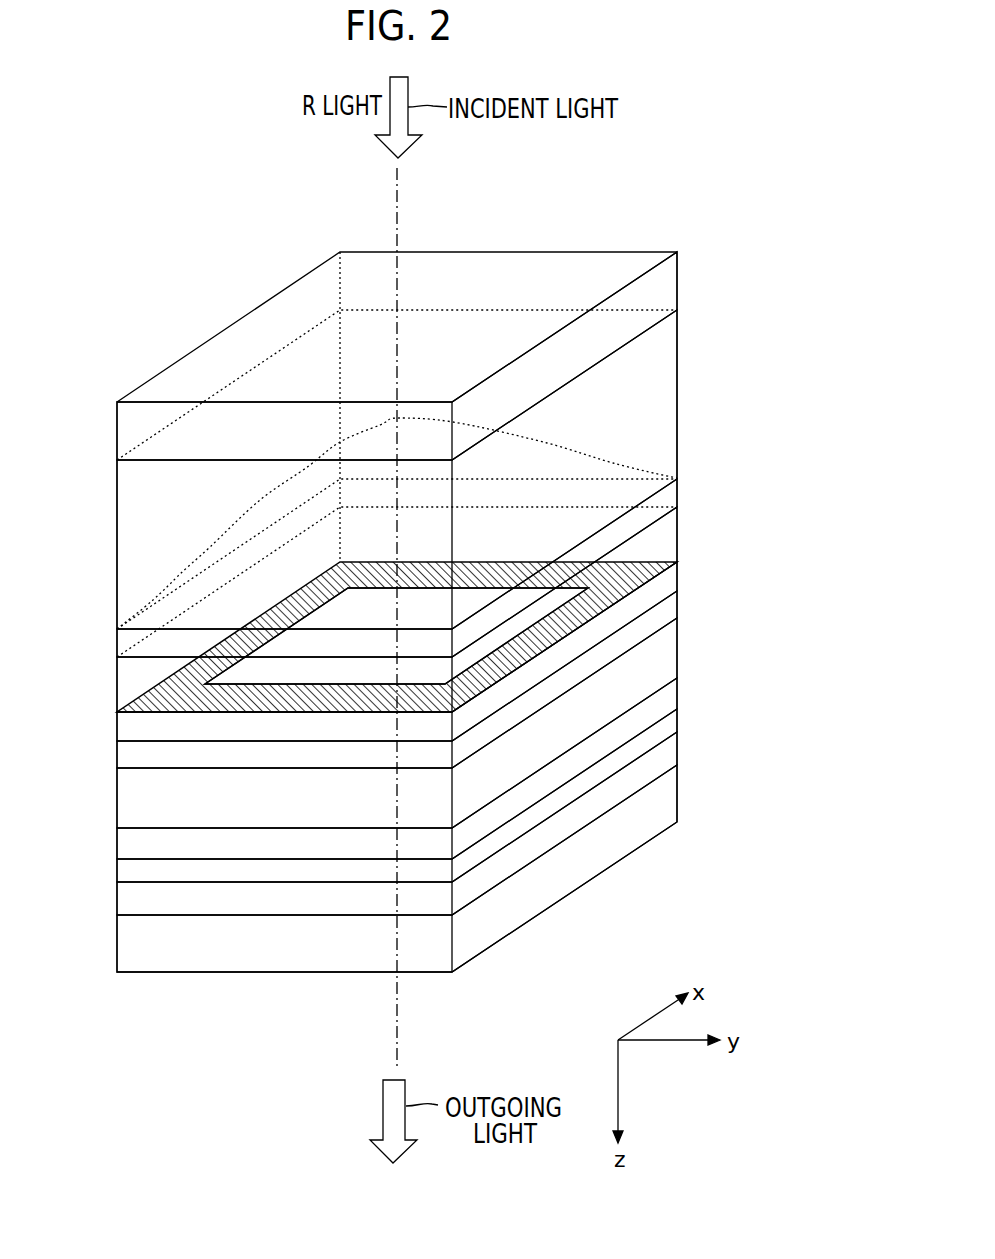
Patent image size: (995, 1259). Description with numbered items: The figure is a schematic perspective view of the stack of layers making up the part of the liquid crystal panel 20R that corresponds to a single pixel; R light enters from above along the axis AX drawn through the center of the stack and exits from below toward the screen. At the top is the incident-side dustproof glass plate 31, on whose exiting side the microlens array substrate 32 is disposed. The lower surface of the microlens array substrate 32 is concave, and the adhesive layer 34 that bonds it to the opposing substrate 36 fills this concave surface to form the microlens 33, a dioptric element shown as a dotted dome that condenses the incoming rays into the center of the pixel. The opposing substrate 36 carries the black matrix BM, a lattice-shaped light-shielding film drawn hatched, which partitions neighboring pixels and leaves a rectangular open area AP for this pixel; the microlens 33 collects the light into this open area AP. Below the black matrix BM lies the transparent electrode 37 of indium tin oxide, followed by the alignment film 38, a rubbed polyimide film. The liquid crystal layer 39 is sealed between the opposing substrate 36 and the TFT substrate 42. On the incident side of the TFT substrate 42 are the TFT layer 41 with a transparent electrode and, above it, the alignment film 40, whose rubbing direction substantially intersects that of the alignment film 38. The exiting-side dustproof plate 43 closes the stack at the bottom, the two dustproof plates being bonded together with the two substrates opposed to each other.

The red light modulation device (liquid crystal light valve) 20R is at (652, 218).
The incident-side dustproof glass plate 31 is at (117, 436).
The microlens array substrate 32 is at (117, 523).
The microlens 33 is at (178, 578).
The adhesive layer 34 is at (117, 643).
The opposing substrate 36 is at (117, 699).
The black matrix BM is at (150, 698).
The open area AP is at (488, 587).
The transparent electrode 37 is at (117, 727).
The alignment film 38 is at (117, 755).
The liquid crystal layer 39 is at (117, 798).
The alignment film 40 is at (117, 843).
The TFT layer 41 is at (117, 870).
The TFT substrate 42 is at (117, 898).
The exiting-side dustproof plate 43 is at (117, 945).
The optical axis AX is at (392, 1023).